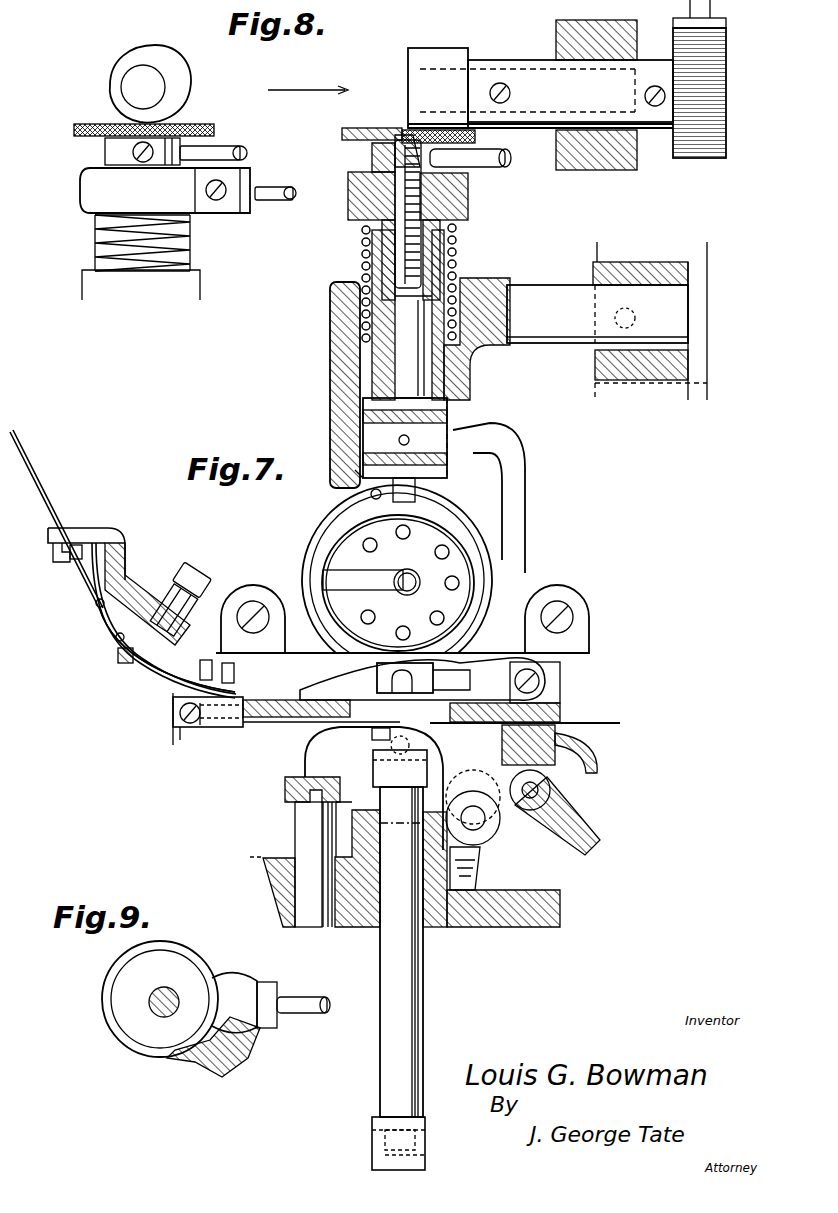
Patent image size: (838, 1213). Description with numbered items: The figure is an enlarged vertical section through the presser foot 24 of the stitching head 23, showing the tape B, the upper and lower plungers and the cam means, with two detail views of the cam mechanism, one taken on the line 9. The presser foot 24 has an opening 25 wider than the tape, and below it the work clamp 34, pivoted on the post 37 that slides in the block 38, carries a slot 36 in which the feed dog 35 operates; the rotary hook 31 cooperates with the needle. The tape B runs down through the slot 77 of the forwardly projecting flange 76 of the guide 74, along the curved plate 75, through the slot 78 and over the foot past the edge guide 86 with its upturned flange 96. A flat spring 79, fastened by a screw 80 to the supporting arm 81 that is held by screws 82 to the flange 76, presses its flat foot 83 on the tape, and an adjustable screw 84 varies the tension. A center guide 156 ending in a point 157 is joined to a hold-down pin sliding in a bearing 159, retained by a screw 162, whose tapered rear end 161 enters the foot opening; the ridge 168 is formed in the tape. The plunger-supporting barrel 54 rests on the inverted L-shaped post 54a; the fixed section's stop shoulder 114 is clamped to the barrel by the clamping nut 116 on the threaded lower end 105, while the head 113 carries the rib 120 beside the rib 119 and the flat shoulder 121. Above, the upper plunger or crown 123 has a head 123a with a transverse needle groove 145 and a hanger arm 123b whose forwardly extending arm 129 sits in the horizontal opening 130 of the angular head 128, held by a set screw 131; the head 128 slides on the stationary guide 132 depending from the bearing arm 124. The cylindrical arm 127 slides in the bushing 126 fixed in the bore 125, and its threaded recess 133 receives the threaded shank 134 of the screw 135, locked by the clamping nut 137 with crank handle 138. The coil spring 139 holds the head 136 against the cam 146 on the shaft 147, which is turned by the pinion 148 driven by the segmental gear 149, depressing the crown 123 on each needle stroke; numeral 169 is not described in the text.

In FIG. 8, the cam 146 is at (112, 66).
In FIG. 7, the cam 146 is at (408, 57).
In FIG. 8, the horizontal shaft 147 is at (135, 87).
In FIG. 7, the horizontal shaft 147 is at (440, 69).
In FIG. 7, the pinion 148 is at (726, 95).
In FIG. 7, the segmental gear 149 is at (726, 32).
In FIG. 8, the head 136 is at (190, 128).
In FIG. 7, the head 136 is at (378, 128).
In FIG. 8, the pin 169 is at (240, 144).
In FIG. 7, the pin 169 is at (505, 164).
In FIG. 8, the section line 9- 9 is at (292, 168).
In FIG. 8, the threaded shank 134 is at (140, 165).
In FIG. 7, the threaded shank 134 is at (382, 237).
In FIG. 9, the threaded shank 134 is at (172, 980).
In FIG. 7, the screw 135 is at (352, 203).
In FIG. 8, the clamping nut 137 is at (92, 196).
In FIG. 7, the clamping nut 137 is at (468, 205).
In FIG. 9, the clamping nut 137 is at (145, 1032).
In FIG. 8, the crank handle 138 is at (278, 200).
In FIG. 9, the crank handle 138 is at (305, 1013).
In FIG. 8, the flat horizontal shoulder 121 is at (95, 225).
In FIG. 8, the coil spring 139 is at (95, 256).
In FIG. 7, the coil spring 139 is at (362, 259).
In FIG. 7, the threaded recess 133 is at (460, 267).
In FIG. 8, the bearing sleeve or bushing 126 is at (190, 262).
In FIG. 7, the bearing sleeve or bushing 126 is at (330, 332).
In FIG. 7, the vertical bore 125 is at (372, 374).
In FIG. 7, the horizontal bearing arm 124 is at (575, 321).
In FIG. 7, the stitching head 23 is at (635, 378).
In FIG. 7, the cylindrical arm 127 is at (415, 374).
In FIG. 7, the angular head 128 is at (455, 410).
In FIG. 7, the set screw 131 is at (399, 440).
In FIG. 7, the stationary guide 132 is at (358, 471).
In FIG. 7, the forwardly extending arm 129 is at (500, 432).
In FIG. 7, the horizontal opening 130 is at (420, 483).
In FIG. 7, the hanger arm 123b is at (527, 525).
In FIG. 7, the rotary hook 31 is at (487, 587).
In FIG. 7, the transverse groove 145 is at (405, 630).
In FIG. 7, the upturned flange 96 is at (253, 619).
In FIG. 7, the edge guide 86 is at (290, 656).
In FIG. 7, the opening 25 is at (440, 690).
In FIG. 7, the upper plunger or crown 123 is at (369, 676).
In FIG. 7, the head 123a is at (445, 668).
In FIG. 7, the presser foot 24 is at (560, 712).
In FIG. 7, the slot 36 is at (575, 728).
In FIG. 7, the feed dog 35 is at (560, 751).
In FIG. 7, the work clamp 34 is at (597, 769).
In FIG. 7, the ridge 168 is at (270, 722).
In FIG. 7, the center guide 156 is at (173, 719).
In FIG. 7, the point 157 is at (172, 743).
In FIG. 7, the bearing 159 is at (202, 731).
In FIG. 7, the screw 162 is at (218, 724).
In FIG. 7, the upwardly tapered rear end 161 is at (378, 736).
In FIG. 7, the ridge forming rib 120 is at (372, 753).
In FIG. 7, the ridge forming rib 119 is at (427, 761).
In FIG. 7, the head 113 is at (427, 782).
In FIG. 7, the post 37 is at (307, 823).
In FIG. 7, the stop shoulder 114 is at (423, 835).
In FIG. 7, the block 38 is at (263, 872).
In FIG. 7, the plunger-supporting barrel 54 is at (415, 1004).
In FIG. 7, the inverted L-shaped post 54a is at (372, 1135).
In FIG. 7, the clamping nut 116 is at (425, 1139).
In FIG. 7, the threaded lower end 105 is at (425, 1157).
In FIG. 7, the tape B is at (33, 470).
In FIG. 7, the tape-receiving slot 77 is at (80, 528).
In FIG. 7, the forwardly projecting flange 76 is at (53, 553).
In FIG. 7, the screws 82 is at (70, 560).
In FIG. 7, the supporting arm 81 is at (124, 580).
In FIG. 7, the screw 80 is at (187, 582).
In FIG. 7, the adjustable screw 84 is at (200, 569).
In FIG. 7, the guide 74 is at (148, 691).
In FIG. 7, the curved plate 75 is at (96, 605).
In FIG. 7, the tape-receiving slot 78 is at (116, 639).
In FIG. 7, the flat spring 79 is at (125, 665).
In FIG. 7, the flat foot 83 is at (213, 687).